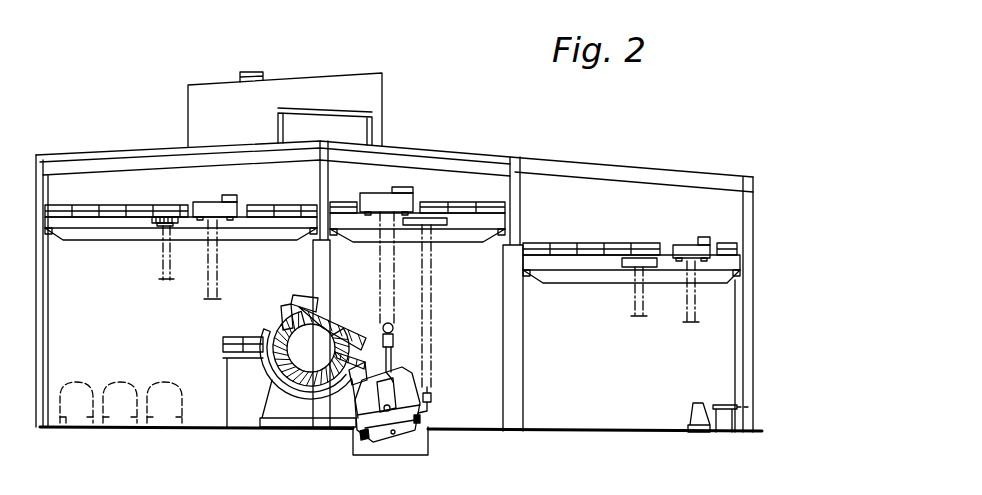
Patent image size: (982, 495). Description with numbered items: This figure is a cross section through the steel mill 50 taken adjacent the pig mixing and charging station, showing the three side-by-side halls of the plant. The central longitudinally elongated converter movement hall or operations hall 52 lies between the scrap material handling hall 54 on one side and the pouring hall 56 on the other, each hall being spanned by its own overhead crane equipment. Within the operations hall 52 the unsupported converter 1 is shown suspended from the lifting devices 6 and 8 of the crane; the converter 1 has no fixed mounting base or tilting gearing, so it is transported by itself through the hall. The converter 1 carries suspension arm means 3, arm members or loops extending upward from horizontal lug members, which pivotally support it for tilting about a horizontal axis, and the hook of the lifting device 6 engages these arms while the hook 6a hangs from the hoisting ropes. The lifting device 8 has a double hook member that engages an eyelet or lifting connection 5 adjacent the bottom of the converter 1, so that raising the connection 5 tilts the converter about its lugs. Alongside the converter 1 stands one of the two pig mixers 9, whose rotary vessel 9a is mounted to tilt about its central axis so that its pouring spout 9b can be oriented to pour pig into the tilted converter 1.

The steel mill 50 is at (540, 156).
The scrap material handling hall 54 is at (285, 191).
The operations hall 52 is at (457, 194).
The pouring hall 56 is at (619, 217).
The lifting device 6 is at (386, 285).
The crane hook 6a is at (394, 340).
The pig mixer 9 is at (311, 342).
The rotary vessel 9a is at (282, 342).
The pouring spout 9b is at (340, 336).
The converter 1 is at (405, 393).
The suspension arm means 3 is at (401, 399).
The lifting device 8 is at (432, 400).
The lifting connection 5 is at (420, 422).